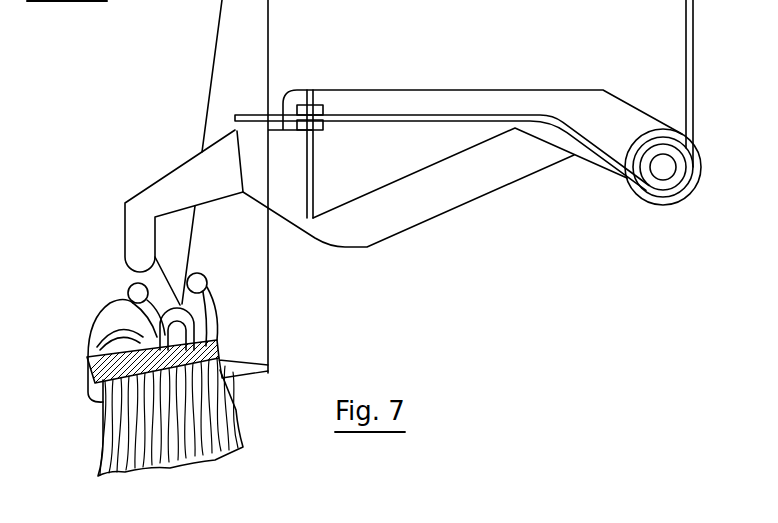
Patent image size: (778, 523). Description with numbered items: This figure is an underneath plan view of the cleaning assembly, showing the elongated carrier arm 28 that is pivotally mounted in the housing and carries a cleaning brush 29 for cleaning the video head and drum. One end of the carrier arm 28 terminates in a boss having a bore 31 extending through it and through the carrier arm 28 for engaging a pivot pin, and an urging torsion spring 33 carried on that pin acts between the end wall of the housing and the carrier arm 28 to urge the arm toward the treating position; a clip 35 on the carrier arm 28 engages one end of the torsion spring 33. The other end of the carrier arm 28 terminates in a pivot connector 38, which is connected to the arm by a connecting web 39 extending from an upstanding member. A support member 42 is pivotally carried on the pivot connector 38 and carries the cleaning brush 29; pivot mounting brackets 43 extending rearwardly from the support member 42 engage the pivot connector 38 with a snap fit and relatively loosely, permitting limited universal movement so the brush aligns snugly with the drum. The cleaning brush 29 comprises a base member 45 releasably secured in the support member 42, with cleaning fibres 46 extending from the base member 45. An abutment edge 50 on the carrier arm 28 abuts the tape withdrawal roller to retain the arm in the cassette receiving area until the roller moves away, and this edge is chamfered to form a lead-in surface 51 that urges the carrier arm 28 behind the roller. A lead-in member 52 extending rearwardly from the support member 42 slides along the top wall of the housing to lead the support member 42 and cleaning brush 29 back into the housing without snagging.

The carrier arm 28 is at (435, 102).
The cleaning brush 29 is at (132, 440).
The bore 31 is at (663, 170).
The urging torsion spring 33 is at (370, 118).
The clip 35 is at (313, 97).
The pivot connector 38 is at (157, 327).
The connecting web 39 is at (148, 278).
The support member 42 is at (107, 343).
The pivot mounting brackets 43 is at (207, 312).
The base member 45 is at (223, 366).
The cleaning fibres 46 is at (202, 450).
The abutment edge 50 is at (500, 178).
The lead-in surface 51 is at (435, 192).
The lead-in member 52 is at (228, 45).